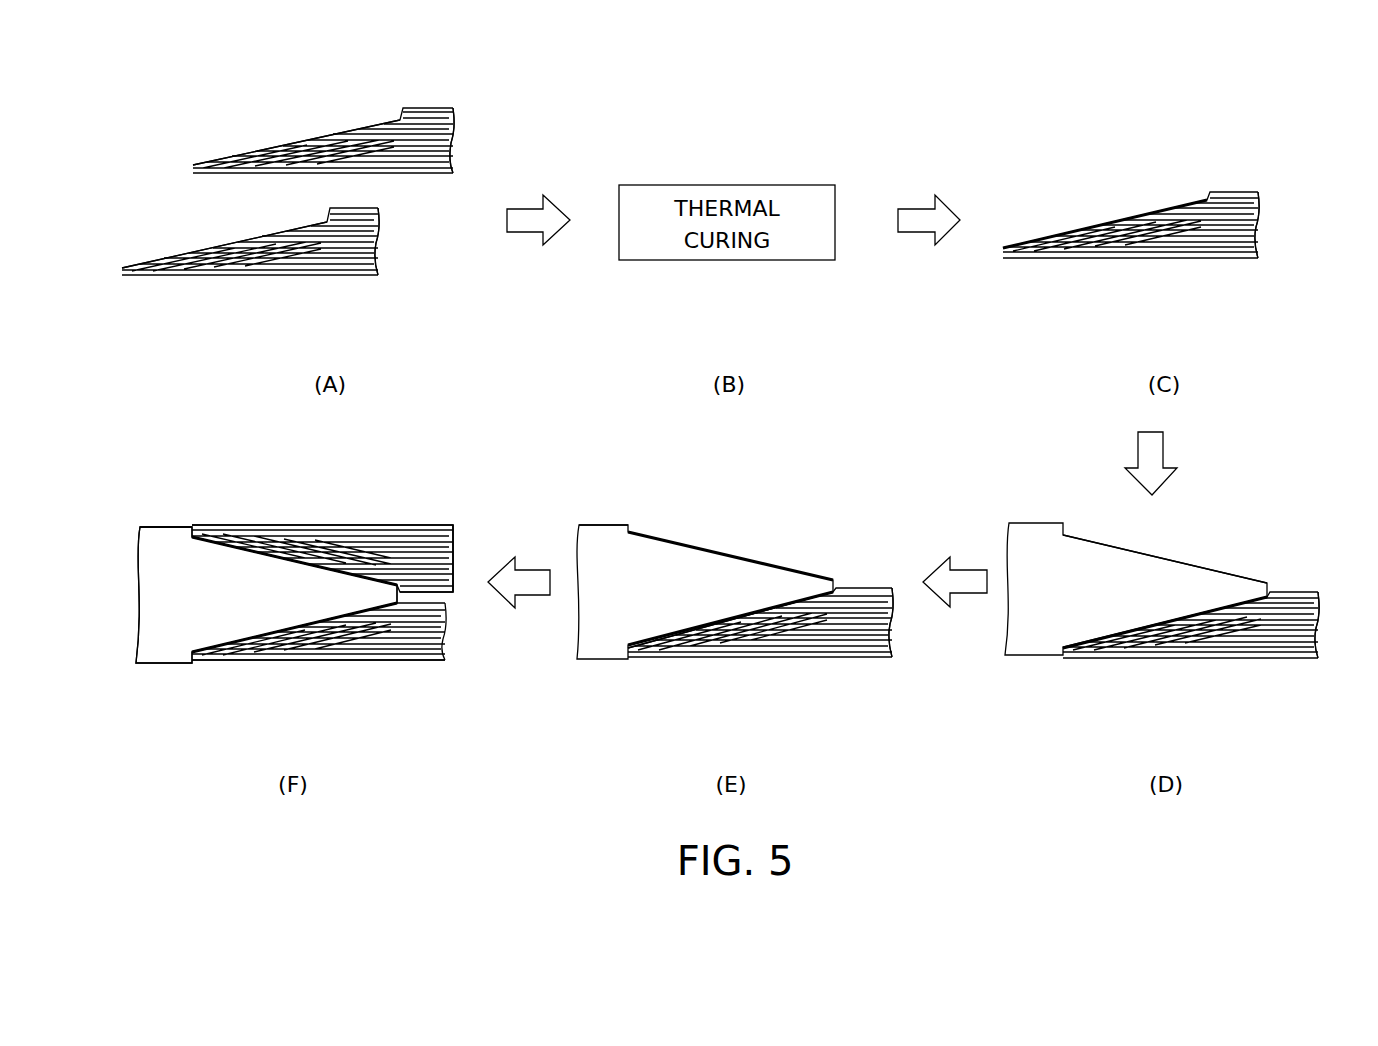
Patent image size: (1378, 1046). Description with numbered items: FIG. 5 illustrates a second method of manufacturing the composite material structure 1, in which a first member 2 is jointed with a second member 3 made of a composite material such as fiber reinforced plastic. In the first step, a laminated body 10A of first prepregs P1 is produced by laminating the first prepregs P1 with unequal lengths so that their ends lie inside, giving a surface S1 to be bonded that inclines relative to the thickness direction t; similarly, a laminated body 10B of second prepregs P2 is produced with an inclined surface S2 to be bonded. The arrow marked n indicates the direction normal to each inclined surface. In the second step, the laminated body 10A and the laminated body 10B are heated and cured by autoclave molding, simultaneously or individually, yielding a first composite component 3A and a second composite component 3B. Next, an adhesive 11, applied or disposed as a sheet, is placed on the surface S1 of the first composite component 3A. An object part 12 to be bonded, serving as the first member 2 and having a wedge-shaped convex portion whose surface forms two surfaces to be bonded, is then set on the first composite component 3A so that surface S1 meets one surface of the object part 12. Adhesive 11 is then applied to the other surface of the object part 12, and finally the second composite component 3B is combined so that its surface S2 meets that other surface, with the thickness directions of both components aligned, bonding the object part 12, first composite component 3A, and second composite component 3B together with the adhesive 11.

The composite material structure 1 is at (433, 468).
The first member 2 is at (1228, 570).
The second member 3 is at (1227, 190).
The first composite component 3A is at (1247, 192).
The second composite component 3B is at (430, 523).
The laminated body of the first prepregs 10A is at (303, 308).
The laminated body of the second prepregs 10B is at (415, 103).
The adhesive 11 is at (1100, 220).
The object part to be bonded 12 is at (1188, 562).
The first prepregs P1 is at (352, 310).
The second prepregs P2 is at (443, 105).
The surface to be bonded S1 is at (252, 268).
The surface to be bonded S2 is at (307, 140).
The normal direction n is at (307, 140).
The thickness direction t is at (480, 183).